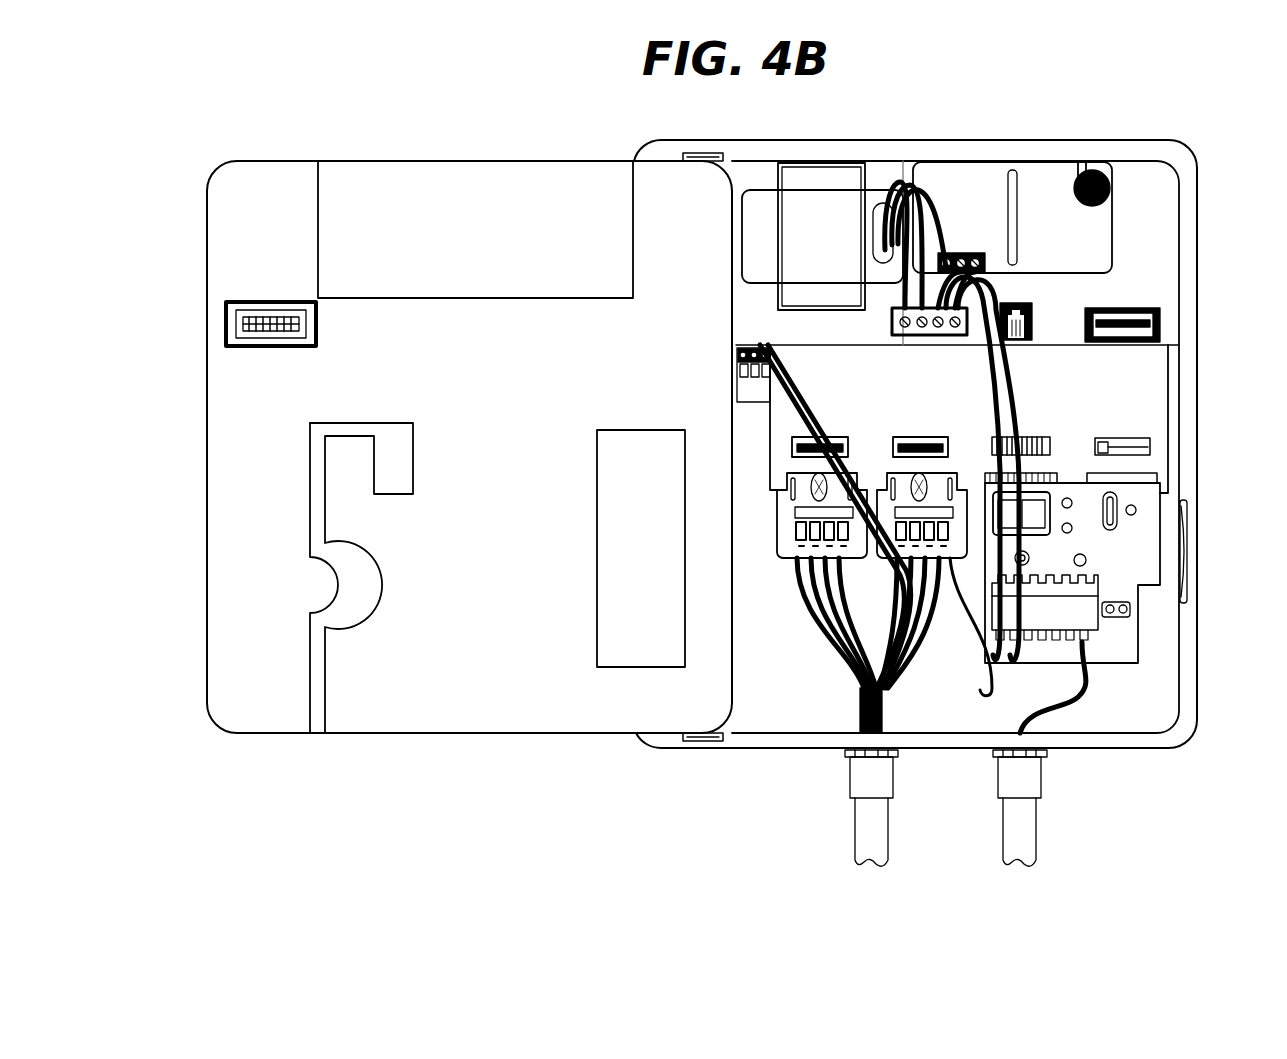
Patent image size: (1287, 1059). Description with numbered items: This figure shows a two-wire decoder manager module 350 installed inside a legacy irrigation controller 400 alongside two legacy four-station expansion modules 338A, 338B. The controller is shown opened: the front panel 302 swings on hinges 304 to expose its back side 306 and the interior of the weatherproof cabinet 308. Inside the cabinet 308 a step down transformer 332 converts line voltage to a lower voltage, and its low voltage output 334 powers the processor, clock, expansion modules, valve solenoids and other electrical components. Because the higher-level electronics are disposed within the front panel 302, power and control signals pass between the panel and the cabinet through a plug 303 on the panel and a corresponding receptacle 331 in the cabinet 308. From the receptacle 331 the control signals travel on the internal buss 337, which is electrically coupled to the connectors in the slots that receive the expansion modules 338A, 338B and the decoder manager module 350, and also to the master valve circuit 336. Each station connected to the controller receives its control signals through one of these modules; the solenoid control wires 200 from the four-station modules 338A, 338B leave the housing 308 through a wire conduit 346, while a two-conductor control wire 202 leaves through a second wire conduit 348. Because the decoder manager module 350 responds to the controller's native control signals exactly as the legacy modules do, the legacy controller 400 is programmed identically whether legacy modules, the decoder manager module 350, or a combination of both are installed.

The legacy irrigation controller 400 is at (990, 113).
The front panel 302 is at (487, 161).
The plug 303 is at (276, 300).
The hinges 304 is at (693, 163).
The back side 306 is at (513, 509).
The weatherproof cabinet 308 is at (1188, 668).
The receptacle 331 is at (1121, 308).
The step down transformer 332 is at (842, 247).
The low voltage output 334 is at (930, 228).
The master valve circuit 336 is at (736, 386).
The internal buss 337 is at (990, 431).
The four-station expansion module 338A is at (860, 560).
The four-station expansion module 338B is at (952, 562).
The decoder manager module 350 is at (1143, 530).
The multi-conductor control wire 200 is at (858, 712).
The two-conductor control wire 202 is at (1050, 712).
The wire conduit 346 is at (886, 818).
The wire conduit 348 is at (1036, 818).